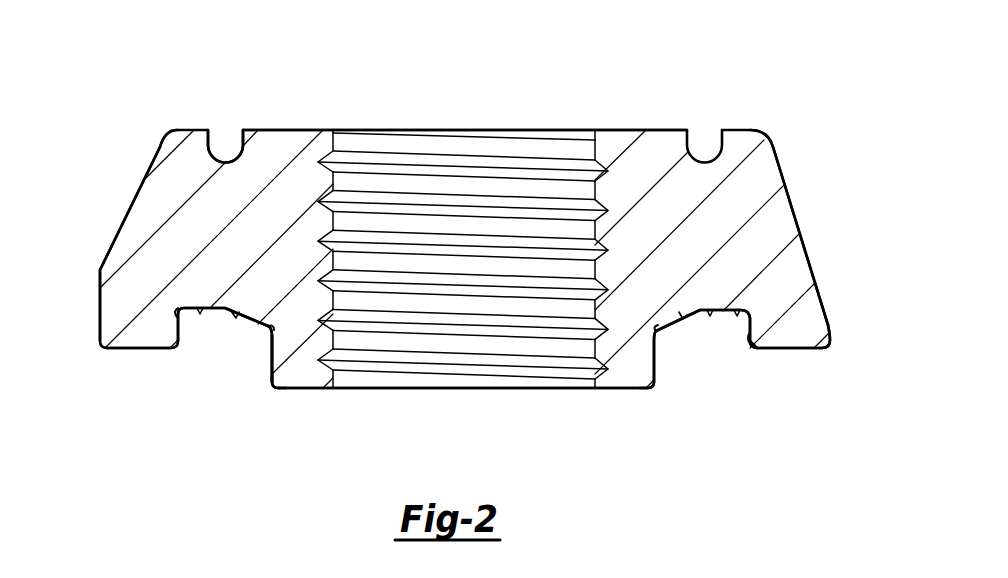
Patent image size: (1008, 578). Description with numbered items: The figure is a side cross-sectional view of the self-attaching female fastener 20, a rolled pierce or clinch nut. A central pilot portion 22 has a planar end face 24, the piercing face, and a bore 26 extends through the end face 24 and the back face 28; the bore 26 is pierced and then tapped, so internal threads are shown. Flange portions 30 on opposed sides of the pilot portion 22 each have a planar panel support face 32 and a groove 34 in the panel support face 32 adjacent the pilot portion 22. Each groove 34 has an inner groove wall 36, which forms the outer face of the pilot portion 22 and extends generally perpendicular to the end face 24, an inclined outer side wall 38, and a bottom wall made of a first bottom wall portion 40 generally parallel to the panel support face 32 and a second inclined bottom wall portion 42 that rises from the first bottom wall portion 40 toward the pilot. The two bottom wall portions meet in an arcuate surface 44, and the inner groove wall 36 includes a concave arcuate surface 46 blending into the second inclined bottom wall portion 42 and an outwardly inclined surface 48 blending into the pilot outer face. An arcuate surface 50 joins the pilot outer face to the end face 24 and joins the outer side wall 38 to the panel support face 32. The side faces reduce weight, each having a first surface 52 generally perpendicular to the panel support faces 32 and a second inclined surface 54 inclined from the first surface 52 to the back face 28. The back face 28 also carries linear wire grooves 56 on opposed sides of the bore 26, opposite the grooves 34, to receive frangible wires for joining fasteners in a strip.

The self-attaching female fastener 20 is at (750, 95).
The central pilot portion 22 is at (641, 388).
The planar end face 24 is at (298, 388).
The bore 26 is at (415, 142).
The back face 28 is at (305, 130).
The flange portion 30 is at (126, 299).
The panel support face 32 is at (800, 352).
The groove 34 is at (200, 372).
The inner groove wall 36 is at (658, 365).
The inclined outer side wall 38 is at (190, 312).
The first bottom wall portion 40 is at (200, 314).
The second inclined bottom wall portion 42 is at (236, 318).
The arcuate surface 44 is at (710, 312).
The concave arcuate surface 46 is at (269, 328).
The outwardly inclined surface 48 is at (270, 345).
The arcuate surface 50 is at (274, 388).
The first surface 52 is at (831, 312).
The second inclined surface 54 is at (797, 193).
The linear wire groove 56 is at (229, 140).